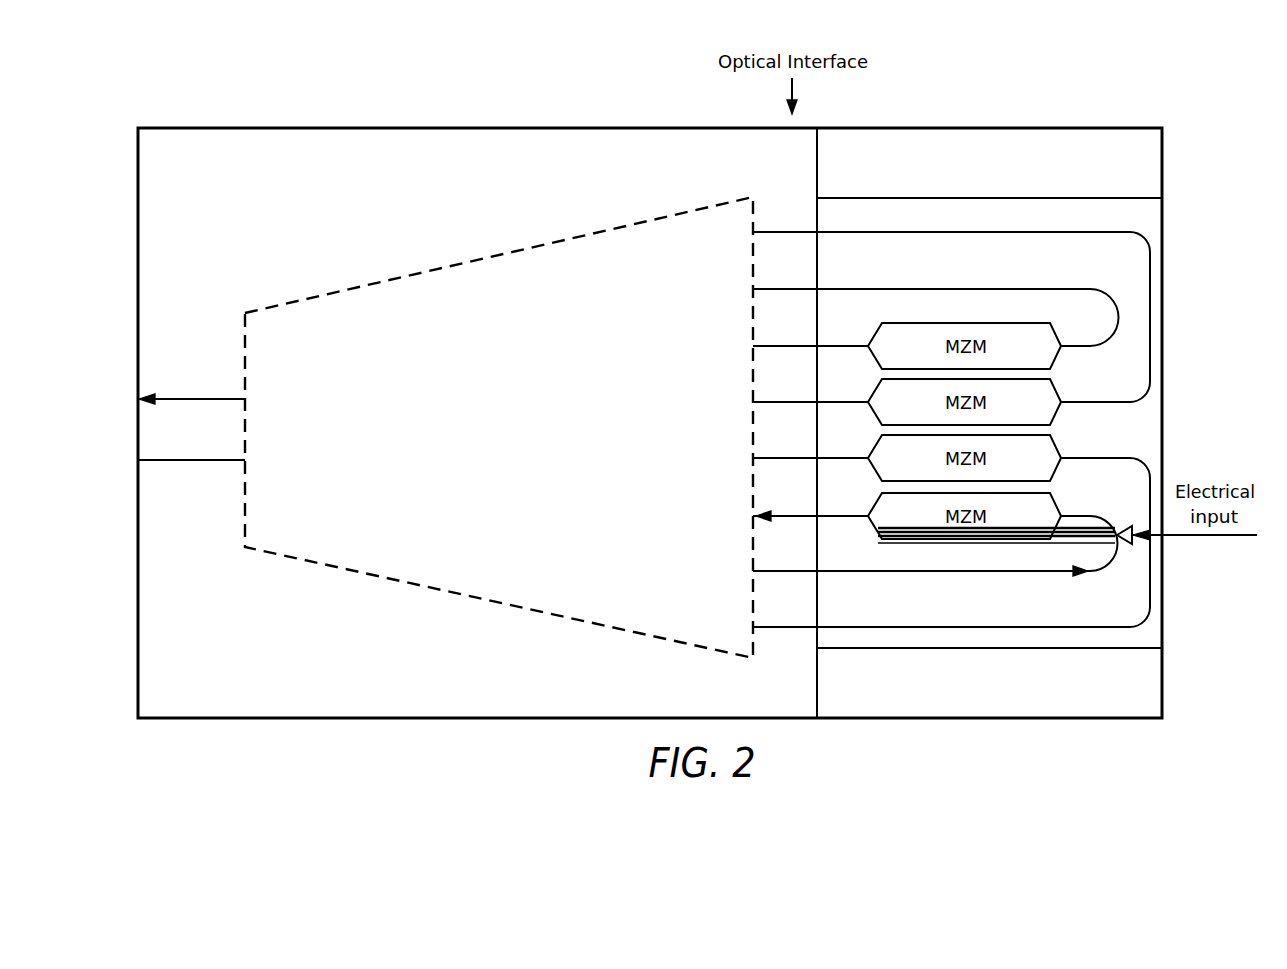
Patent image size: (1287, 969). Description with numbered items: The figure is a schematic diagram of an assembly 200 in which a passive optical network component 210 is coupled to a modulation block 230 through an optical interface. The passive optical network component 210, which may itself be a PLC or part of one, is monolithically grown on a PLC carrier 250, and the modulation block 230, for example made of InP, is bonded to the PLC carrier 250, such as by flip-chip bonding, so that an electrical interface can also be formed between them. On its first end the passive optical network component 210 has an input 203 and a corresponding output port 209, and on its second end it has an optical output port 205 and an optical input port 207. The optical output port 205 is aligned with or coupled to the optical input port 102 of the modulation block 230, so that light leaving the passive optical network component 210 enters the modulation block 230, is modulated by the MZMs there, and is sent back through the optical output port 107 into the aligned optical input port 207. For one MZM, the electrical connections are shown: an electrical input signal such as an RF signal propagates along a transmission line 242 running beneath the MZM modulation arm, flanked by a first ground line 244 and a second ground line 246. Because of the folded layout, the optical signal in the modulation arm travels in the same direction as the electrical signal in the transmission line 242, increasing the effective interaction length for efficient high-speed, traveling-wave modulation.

The assembly 200 is at (222, 78).
The PLC carrier 250 is at (254, 685).
The modulation block 230 is at (993, 198).
The passive optical network component 210 is at (501, 255).
The output port 209 is at (246, 399).
The input 203 is at (246, 460).
The optical input port 207 is at (753, 516).
The optical output port 205 is at (753, 571).
The optical output port 107 is at (817, 517).
The optical input port 102 is at (817, 572).
The first ground line 244 is at (1070, 527).
The transmission line 242 is at (1058, 537).
The second ground line 246 is at (1080, 544).